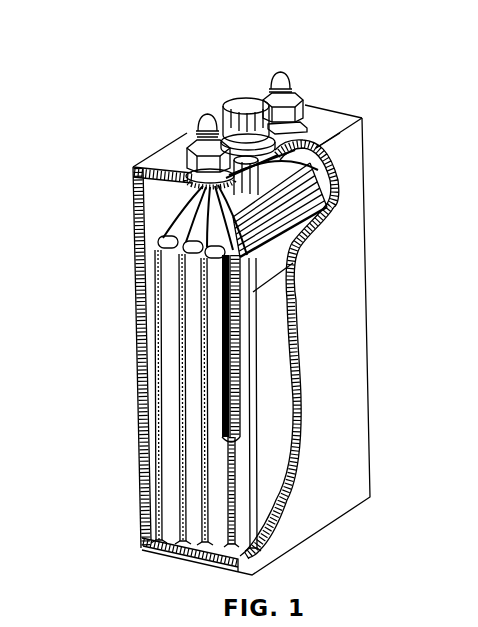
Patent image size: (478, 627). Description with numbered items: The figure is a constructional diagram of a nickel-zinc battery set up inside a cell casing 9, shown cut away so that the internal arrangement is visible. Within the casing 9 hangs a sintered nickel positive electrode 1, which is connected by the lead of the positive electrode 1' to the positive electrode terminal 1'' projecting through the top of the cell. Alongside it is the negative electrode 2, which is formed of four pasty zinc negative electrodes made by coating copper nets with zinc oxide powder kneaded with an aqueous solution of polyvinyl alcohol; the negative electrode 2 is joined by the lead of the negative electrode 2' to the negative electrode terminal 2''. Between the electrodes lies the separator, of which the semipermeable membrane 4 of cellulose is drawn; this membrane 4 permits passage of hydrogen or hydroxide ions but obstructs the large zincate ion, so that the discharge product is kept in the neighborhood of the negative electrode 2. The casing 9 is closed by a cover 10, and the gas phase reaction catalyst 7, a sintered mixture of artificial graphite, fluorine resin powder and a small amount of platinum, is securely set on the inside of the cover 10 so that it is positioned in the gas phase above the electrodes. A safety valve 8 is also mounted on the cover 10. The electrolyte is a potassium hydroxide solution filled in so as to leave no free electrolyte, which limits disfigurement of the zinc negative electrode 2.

The sintered nickel positive electrode 1 is at (148, 400).
The lead of the positive electrode 1' is at (336, 185).
The positive electrode terminal 1'' is at (318, 95).
The negative electrode 2 is at (155, 348).
The lead of the negative electrode 2' is at (142, 220).
The negative electrode terminal 2'' is at (163, 76).
The semipermeable membrane of cellulose 4 is at (250, 274).
The gas phase reaction catalyst 7 is at (187, 141).
The safety valve 8 is at (230, 112).
The cell casing 9 is at (337, 297).
The cover 10 is at (320, 123).